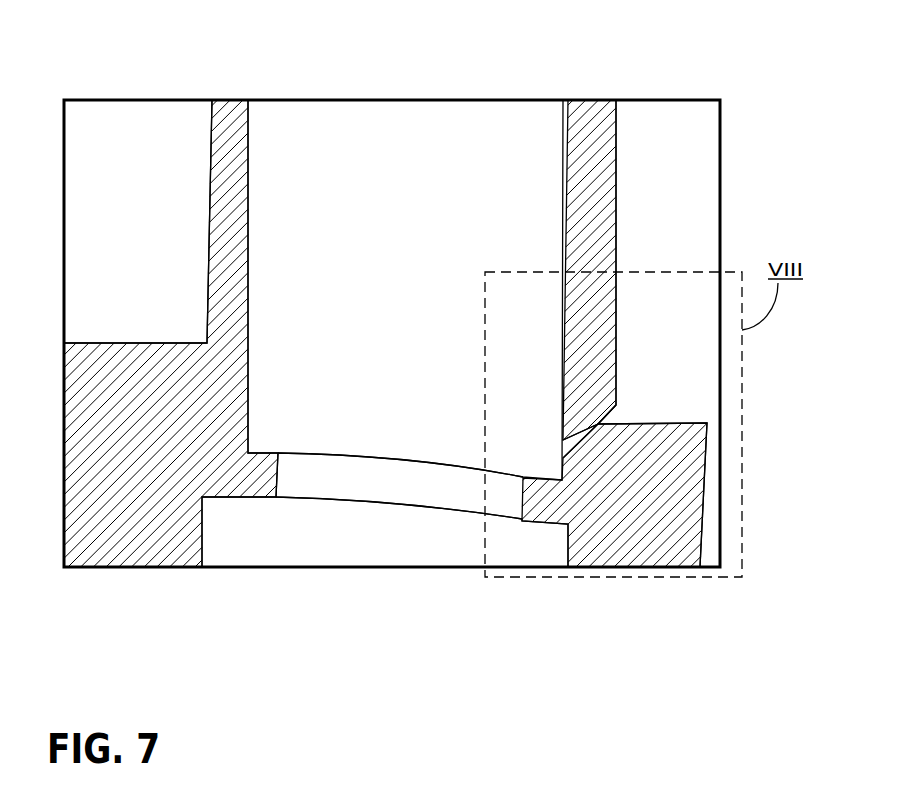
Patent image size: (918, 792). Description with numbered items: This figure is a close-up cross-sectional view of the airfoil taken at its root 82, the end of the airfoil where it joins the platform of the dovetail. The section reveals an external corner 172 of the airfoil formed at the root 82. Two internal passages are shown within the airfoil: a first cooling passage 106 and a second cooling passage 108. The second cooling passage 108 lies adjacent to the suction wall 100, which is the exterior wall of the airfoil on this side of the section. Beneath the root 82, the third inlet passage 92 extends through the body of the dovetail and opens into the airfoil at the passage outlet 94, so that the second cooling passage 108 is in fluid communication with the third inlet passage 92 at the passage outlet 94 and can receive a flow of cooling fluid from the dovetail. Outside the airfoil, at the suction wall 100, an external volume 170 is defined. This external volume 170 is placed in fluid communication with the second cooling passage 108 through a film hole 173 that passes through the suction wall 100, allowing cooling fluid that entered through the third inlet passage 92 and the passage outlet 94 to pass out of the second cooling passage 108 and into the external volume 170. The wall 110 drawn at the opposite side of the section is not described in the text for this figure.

The root 82 is at (684, 417).
The third inlet passage 92 is at (359, 546).
The passage outlet 94 is at (383, 482).
The suction wall 100 is at (616, 133).
The first cooling passage 106 is at (120, 265).
The second cooling passage 108 is at (462, 201).
The outer wall 110 is at (211, 121).
The external volume 170 is at (687, 171).
The external corner 172 is at (616, 420).
The film hole 173 is at (594, 421).